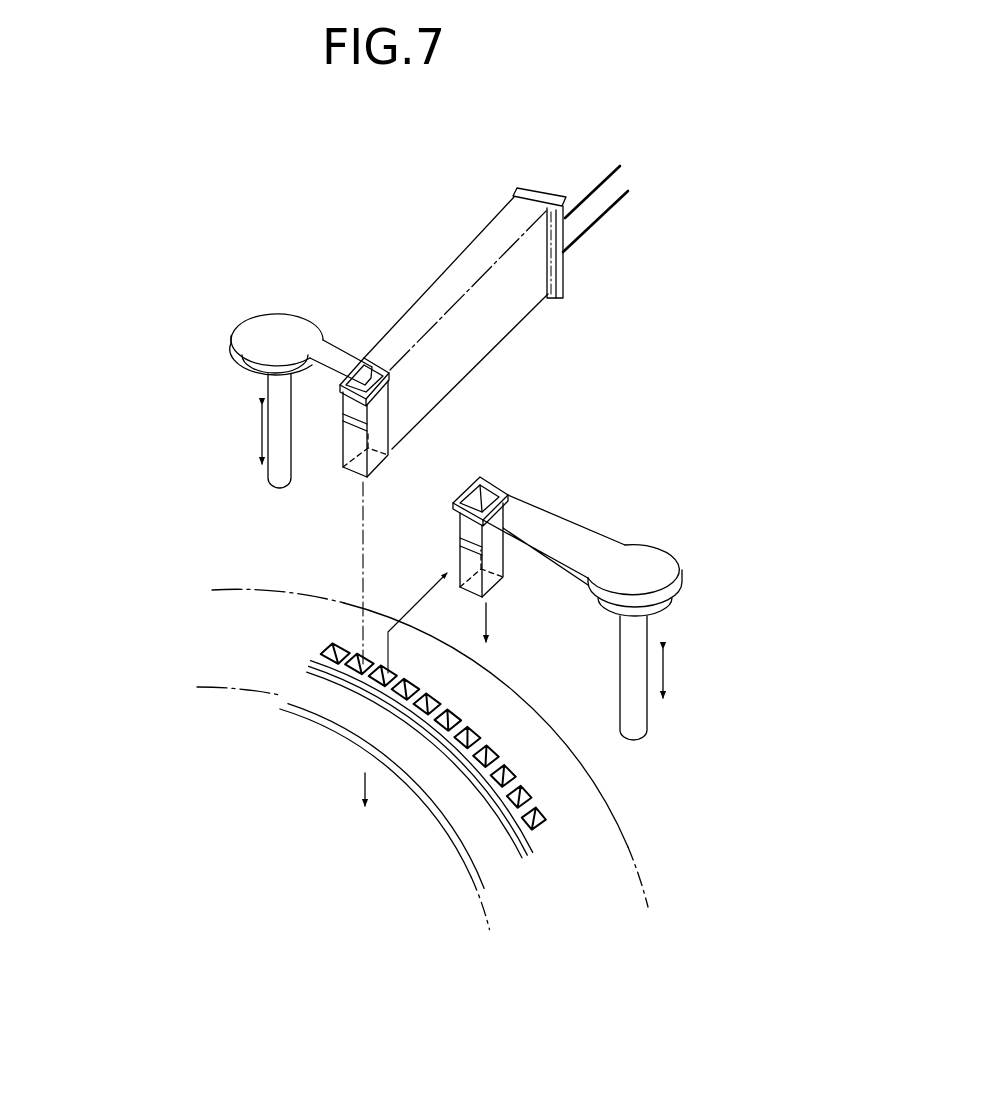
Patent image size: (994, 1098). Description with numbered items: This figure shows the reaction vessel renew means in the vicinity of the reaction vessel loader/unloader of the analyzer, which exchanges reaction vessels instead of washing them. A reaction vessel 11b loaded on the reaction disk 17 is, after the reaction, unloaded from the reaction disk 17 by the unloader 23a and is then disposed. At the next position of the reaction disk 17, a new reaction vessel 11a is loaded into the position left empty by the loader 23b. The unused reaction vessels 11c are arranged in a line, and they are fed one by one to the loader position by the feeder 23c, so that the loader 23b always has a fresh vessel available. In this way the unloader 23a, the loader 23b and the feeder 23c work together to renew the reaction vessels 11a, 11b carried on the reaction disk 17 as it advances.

The new reaction vessel 11a is at (391, 405).
The reaction vessel 11b is at (502, 580).
The unused reaction vessels 11c is at (417, 299).
The reaction disk 17 is at (543, 710).
The unloader 23a is at (652, 547).
The loader 23b is at (272, 308).
The feeder 23c is at (517, 189).